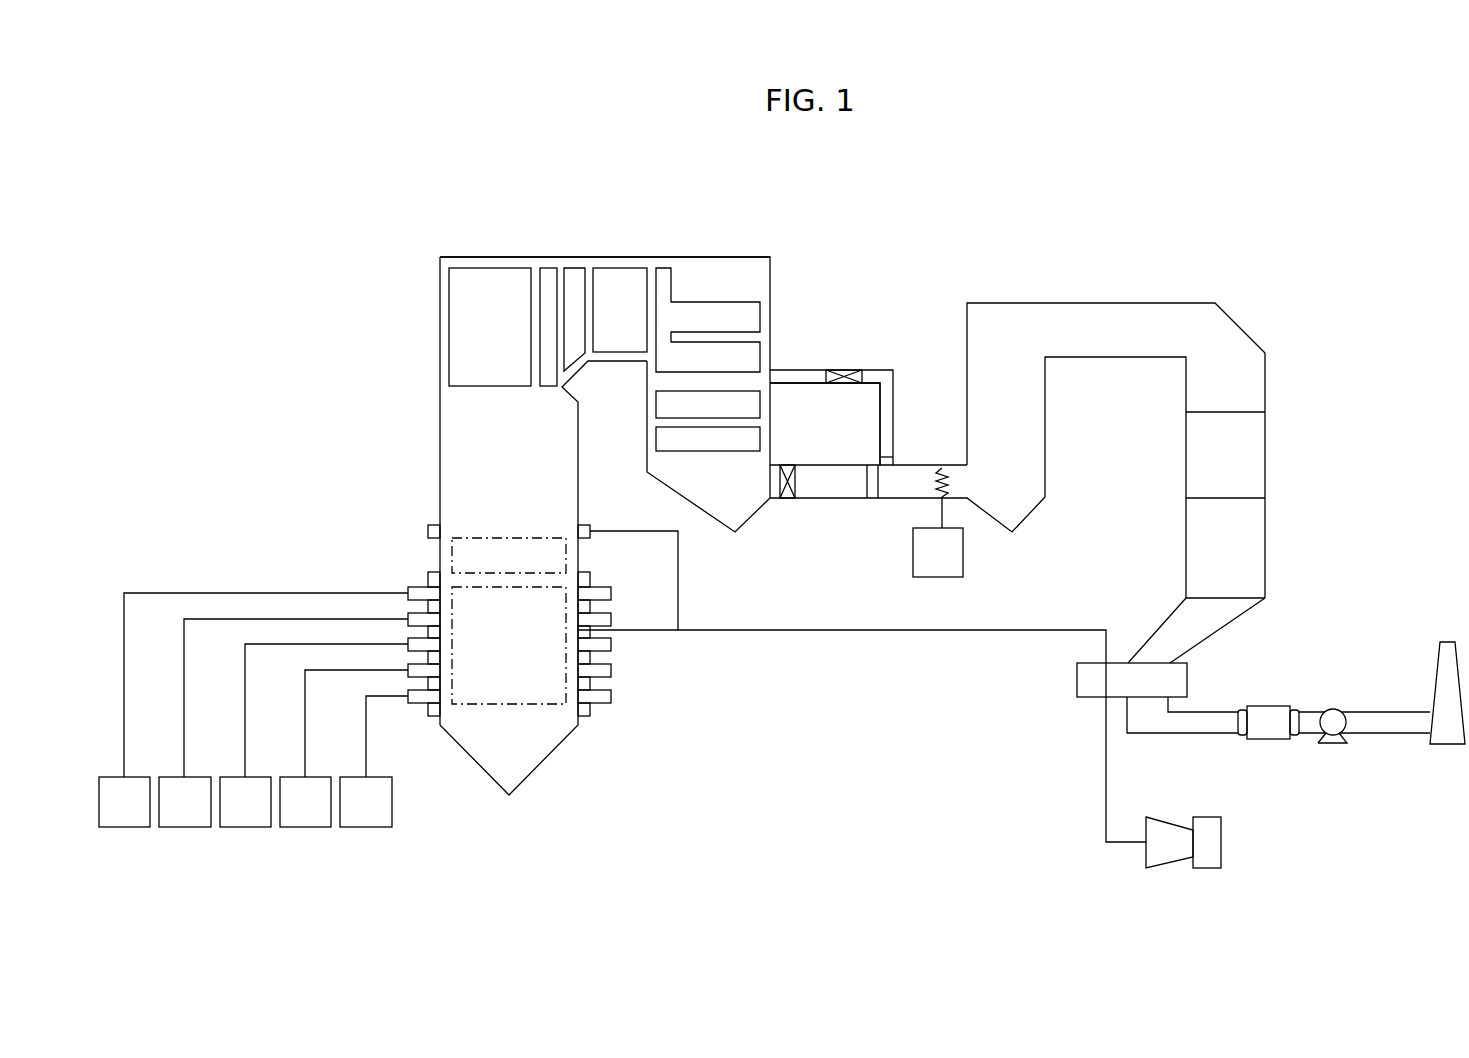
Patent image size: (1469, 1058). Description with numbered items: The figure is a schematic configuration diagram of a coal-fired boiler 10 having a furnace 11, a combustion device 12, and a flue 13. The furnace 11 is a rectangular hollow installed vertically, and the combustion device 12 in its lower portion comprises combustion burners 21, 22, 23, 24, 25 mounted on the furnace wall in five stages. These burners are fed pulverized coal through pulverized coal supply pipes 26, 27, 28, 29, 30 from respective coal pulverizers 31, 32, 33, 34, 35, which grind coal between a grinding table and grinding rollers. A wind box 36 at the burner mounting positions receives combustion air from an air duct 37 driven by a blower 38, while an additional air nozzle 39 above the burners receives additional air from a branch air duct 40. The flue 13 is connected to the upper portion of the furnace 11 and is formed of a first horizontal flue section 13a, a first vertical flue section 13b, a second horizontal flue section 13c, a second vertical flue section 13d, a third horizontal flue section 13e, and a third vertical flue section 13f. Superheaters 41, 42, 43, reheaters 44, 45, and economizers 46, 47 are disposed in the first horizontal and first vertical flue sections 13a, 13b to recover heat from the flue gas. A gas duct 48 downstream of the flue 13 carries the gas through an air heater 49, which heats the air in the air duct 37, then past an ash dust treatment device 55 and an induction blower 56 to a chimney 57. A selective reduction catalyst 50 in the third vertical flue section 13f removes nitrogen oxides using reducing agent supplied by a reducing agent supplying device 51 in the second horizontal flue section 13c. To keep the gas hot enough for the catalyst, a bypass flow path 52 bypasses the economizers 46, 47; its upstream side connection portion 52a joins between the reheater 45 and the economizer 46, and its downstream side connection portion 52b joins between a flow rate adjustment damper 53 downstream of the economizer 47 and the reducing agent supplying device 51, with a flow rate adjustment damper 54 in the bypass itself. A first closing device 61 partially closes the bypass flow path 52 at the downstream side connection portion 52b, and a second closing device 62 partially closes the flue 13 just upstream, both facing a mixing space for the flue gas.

The coal-fired boiler 10 is at (337, 362).
The furnace 11 is at (432, 472).
The combustion device 12 is at (630, 722).
The flue 13 is at (776, 264).
The first horizontal flue section 13a is at (707, 257).
The first vertical flue section 13b is at (770, 345).
The second horizontal flue section 13c is at (925, 465).
The second vertical flue section 13d is at (1045, 412).
The third horizontal flue section 13e is at (1093, 303).
The third vertical flue section 13f is at (1265, 365).
The combustion burner 21 is at (640, 594).
The combustion burner 22 is at (408, 616).
The combustion burner 23 is at (408, 642).
The combustion burner 24 is at (408, 668).
The combustion burner 25 is at (416, 703).
The pulverized coal supply pipe 26 is at (124, 610).
The pulverized coal supply pipe 27 is at (184, 655).
The pulverized coal supply pipe 28 is at (245, 680).
The pulverized coal supply pipe 29 is at (305, 707).
The pulverized coal supply pipe 30 is at (366, 732).
The coal pulverizer 31 is at (124, 827).
The coal pulverizer 32 is at (184, 827).
The coal pulverizer 33 is at (244, 827).
The coal pulverizer 34 is at (304, 827).
The coal pulverizer 35 is at (366, 827).
The wind box 36 is at (590, 578).
The air duct 37 is at (1083, 630).
The blower 38 is at (1215, 840).
The additional air nozzle 39 is at (588, 525).
The branch air duct 40 is at (678, 560).
The superheater 41 is at (490, 268).
The superheater 42 is at (546, 268).
The superheater 43 is at (575, 268).
The reheater 44 is at (622, 268).
The reheater 45 is at (770, 310).
The economizer 46 is at (760, 405).
The economizer 47 is at (760, 437).
The gas duct 48 is at (1172, 733).
The air heater 49 is at (1178, 679).
The selective reduction catalyst 50 is at (1255, 428).
The reducing agent supplying device 51 is at (933, 565).
The bypass flow path 52 is at (875, 370).
The upstream side connection portion 52a is at (770, 375).
The downstream side connection portion 52b is at (895, 458).
The flow rate adjustment damper 53 is at (785, 498).
The flow rate adjustment damper 54 is at (855, 370).
The ash dust treatment device 55 is at (1268, 712).
The induction blower 56 is at (1331, 709).
The chimney 57 is at (1448, 645).
The first closing device 61 is at (876, 498).
The second closing device 62 is at (870, 498).